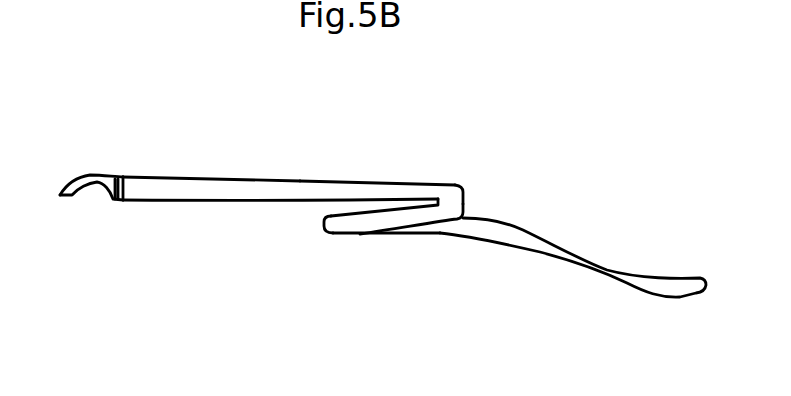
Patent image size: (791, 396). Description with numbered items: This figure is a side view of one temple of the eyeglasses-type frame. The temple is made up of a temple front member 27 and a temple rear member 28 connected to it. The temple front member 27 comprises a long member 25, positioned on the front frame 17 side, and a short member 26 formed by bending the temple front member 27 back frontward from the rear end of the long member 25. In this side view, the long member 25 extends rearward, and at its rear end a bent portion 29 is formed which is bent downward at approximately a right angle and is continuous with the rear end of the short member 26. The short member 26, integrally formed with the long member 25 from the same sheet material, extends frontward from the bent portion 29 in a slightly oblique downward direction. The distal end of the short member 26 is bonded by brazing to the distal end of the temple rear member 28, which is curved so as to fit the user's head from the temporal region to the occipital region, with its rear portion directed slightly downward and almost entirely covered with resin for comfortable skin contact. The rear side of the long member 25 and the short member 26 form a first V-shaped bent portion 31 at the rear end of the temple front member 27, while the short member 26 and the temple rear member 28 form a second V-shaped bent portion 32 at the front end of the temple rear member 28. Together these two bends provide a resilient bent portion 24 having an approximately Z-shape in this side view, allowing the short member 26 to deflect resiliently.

The front frame 17 is at (88, 173).
The resilient bent portion 24 is at (400, 157).
The long member 25 is at (158, 190).
The short member 26 is at (398, 215).
The temple front member 27 is at (213, 173).
The temple rear member 28 is at (582, 255).
The bent portion 29 is at (455, 202).
The first V-shaped bent portion 31 is at (475, 180).
The second V-shaped bent portion 32 is at (332, 250).